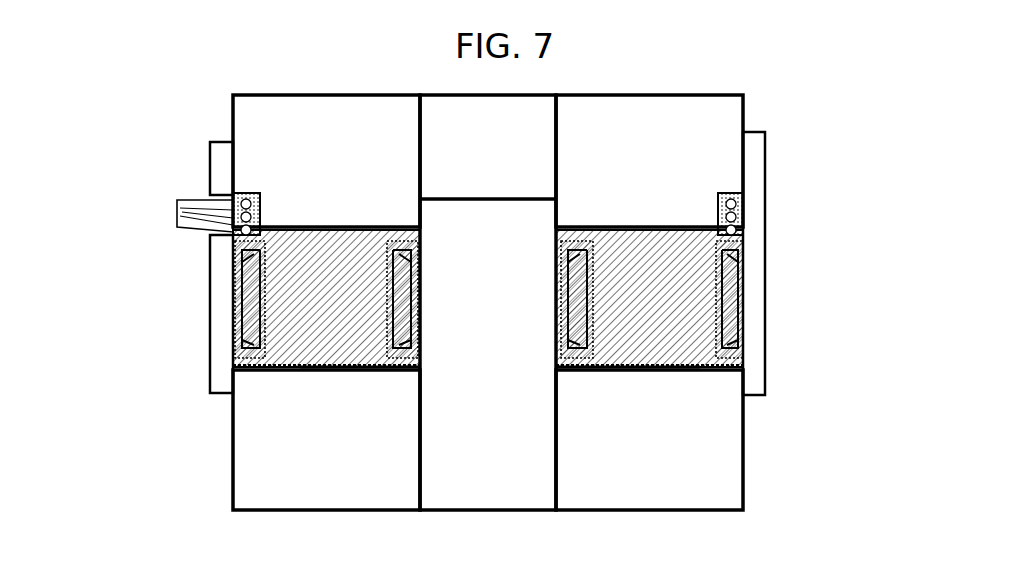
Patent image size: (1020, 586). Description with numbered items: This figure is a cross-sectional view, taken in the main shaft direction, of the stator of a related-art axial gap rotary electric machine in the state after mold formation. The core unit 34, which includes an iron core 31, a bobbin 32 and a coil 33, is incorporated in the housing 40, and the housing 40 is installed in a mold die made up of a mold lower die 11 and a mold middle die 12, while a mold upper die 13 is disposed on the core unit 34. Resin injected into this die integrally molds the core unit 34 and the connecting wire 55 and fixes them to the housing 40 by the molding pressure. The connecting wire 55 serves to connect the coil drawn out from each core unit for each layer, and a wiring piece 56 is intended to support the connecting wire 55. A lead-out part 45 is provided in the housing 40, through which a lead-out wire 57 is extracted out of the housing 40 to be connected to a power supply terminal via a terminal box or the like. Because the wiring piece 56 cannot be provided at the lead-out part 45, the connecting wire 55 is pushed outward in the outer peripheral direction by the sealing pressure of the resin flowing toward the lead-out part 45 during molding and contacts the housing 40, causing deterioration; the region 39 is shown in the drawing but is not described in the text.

The mold lower die 11 is at (265, 463).
The mold middle die 12 is at (503, 490).
The mold upper die 13 is at (263, 124).
The iron core 31 is at (272, 373).
The bobbin 32 is at (305, 355).
The coil 33 is at (436, 299).
The core unit 34 is at (398, 351).
The stator core bottom 39 is at (348, 340).
The housing 40 is at (752, 298).
The lead-out part 45 is at (210, 195).
The connecting wire 55 is at (745, 238).
The wiring piece 56 is at (745, 195).
The lead-out wire 57 is at (180, 220).